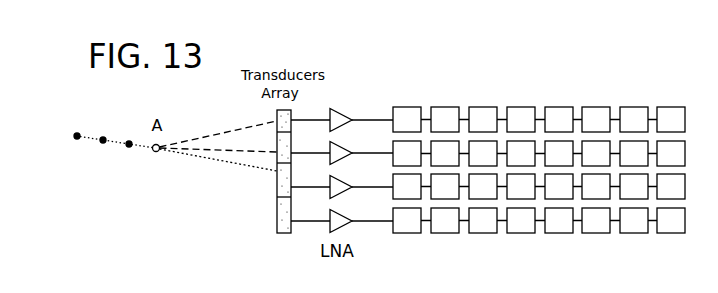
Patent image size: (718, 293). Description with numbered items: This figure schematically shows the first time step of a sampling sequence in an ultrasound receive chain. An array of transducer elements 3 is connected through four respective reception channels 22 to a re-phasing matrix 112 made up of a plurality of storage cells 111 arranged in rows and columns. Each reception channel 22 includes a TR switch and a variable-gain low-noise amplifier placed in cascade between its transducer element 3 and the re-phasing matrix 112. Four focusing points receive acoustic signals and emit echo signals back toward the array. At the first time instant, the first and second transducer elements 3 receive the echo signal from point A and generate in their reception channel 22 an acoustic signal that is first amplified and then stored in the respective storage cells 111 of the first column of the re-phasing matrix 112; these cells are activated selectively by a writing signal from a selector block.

The transducer element 3 is at (277, 221).
The reception channel 22 is at (342, 167).
The storage cell 111 is at (421, 107).
The re-phasing matrix 112 is at (539, 124).